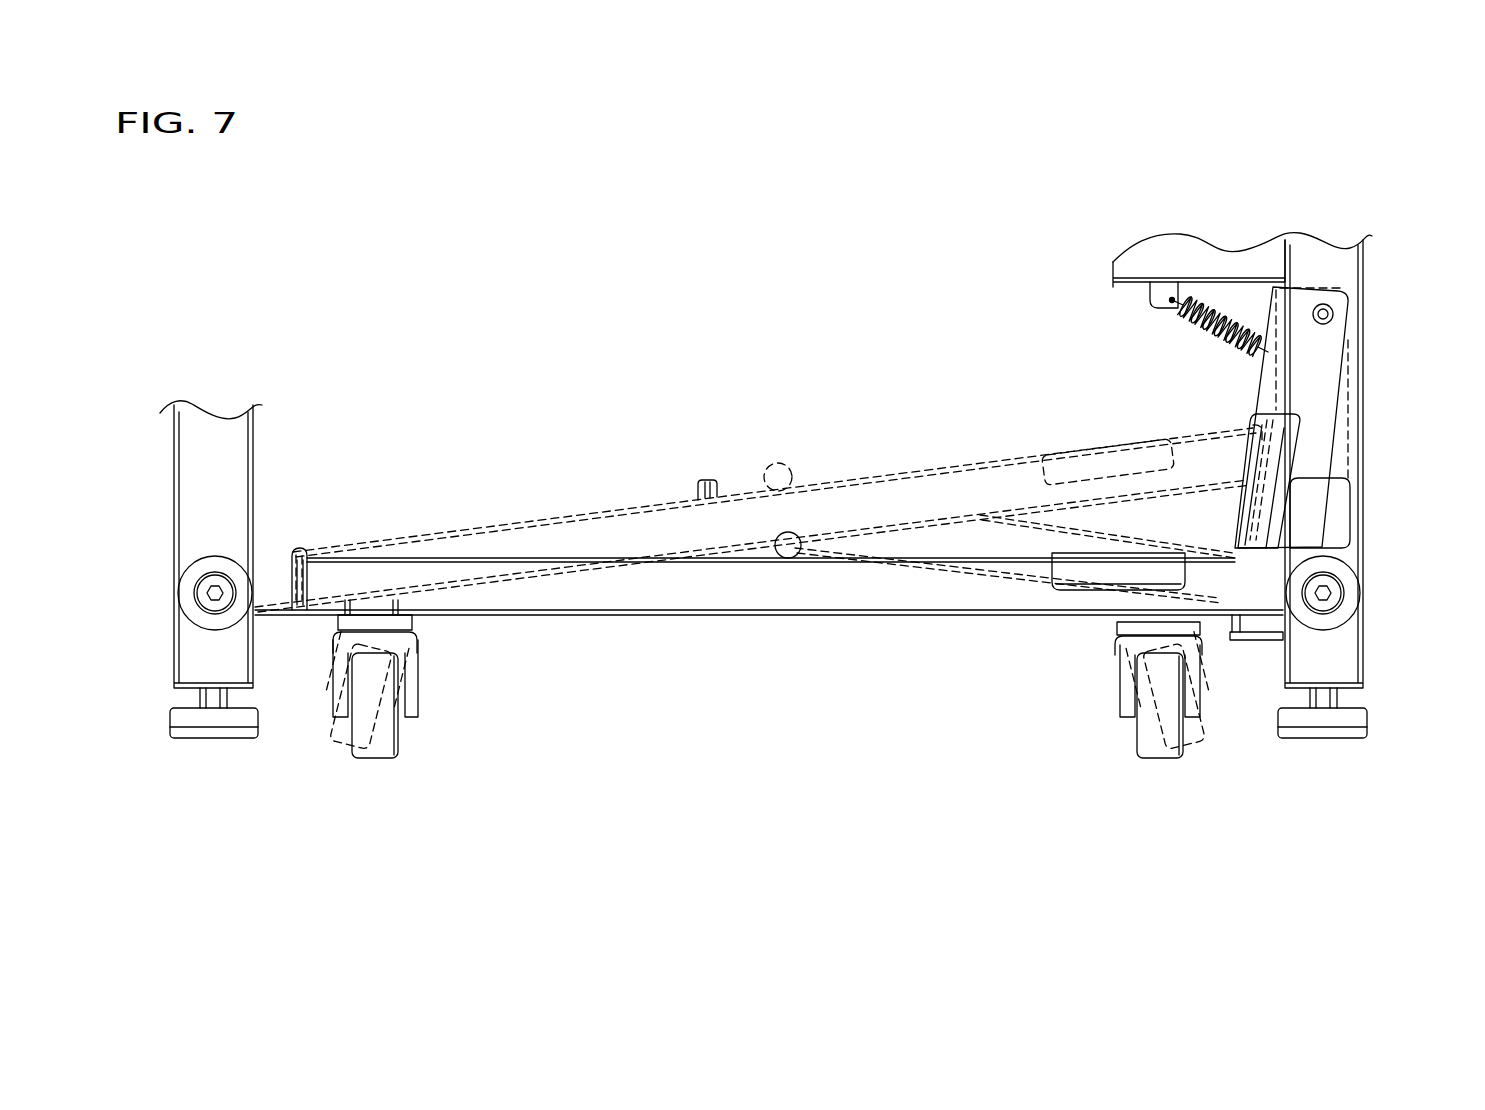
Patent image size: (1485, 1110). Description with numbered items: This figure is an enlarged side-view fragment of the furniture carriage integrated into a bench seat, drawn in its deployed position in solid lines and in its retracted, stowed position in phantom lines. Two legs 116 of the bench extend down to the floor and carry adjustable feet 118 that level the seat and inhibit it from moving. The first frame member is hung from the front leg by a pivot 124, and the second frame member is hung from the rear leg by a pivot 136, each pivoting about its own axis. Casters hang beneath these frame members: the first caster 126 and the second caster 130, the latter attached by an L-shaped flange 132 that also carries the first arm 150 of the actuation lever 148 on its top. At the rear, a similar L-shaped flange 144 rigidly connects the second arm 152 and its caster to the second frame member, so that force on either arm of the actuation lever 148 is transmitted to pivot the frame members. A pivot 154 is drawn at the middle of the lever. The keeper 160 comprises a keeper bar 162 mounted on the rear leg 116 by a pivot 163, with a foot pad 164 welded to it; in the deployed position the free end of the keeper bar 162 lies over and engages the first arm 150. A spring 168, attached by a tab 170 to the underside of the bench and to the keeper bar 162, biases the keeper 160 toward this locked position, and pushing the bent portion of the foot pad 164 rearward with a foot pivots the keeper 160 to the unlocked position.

The leg 116 is at (203, 460).
The foot 118 is at (177, 730).
The pivot 124 is at (215, 585).
The first caster 126 is at (1167, 752).
The second caster 130 is at (417, 717).
The flange 132 is at (277, 600).
The pivot 136 is at (1327, 605).
The flange 144 is at (1230, 617).
The actuation lever 148 is at (632, 713).
The first arm 150 is at (872, 470).
The second arm 152 is at (1190, 537).
The pivot 154 is at (778, 465).
The keeper 160 is at (1351, 400).
The keeper bar 162 is at (1323, 372).
The pivot 163 is at (1325, 312).
The foot pad 164 is at (1282, 452).
The spring 168 is at (1200, 325).
The tab 170 is at (1152, 300).